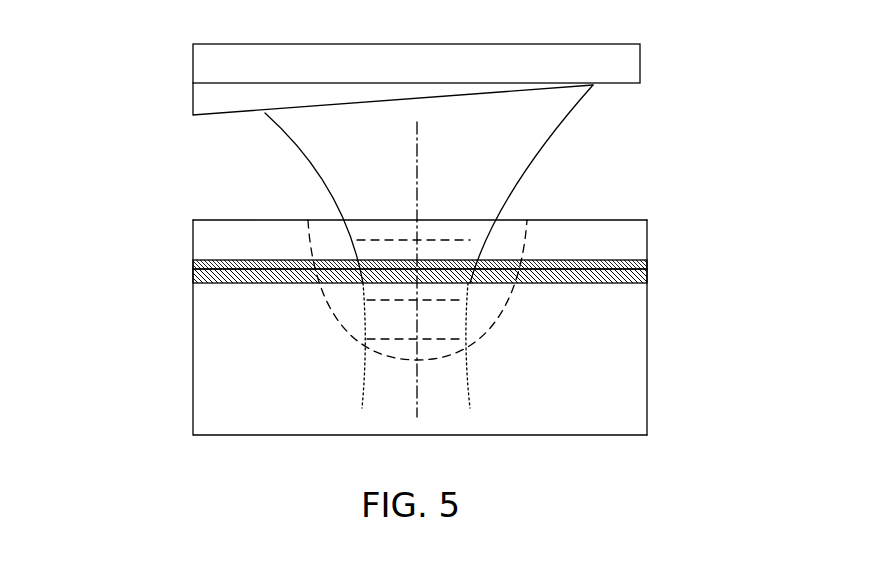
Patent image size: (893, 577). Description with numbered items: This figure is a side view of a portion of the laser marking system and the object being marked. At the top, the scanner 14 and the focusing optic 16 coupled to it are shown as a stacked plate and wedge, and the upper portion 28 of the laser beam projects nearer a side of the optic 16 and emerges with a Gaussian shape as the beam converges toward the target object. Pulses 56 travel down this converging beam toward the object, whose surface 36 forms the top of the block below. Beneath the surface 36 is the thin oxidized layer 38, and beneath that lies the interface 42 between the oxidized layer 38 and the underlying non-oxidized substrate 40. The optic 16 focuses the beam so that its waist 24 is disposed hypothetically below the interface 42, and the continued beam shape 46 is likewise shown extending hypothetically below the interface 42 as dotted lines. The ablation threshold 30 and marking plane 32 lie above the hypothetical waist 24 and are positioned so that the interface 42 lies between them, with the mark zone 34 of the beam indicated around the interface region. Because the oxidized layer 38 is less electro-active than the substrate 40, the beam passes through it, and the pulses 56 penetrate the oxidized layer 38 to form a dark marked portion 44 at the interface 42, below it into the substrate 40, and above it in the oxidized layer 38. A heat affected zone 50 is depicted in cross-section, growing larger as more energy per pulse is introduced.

The scanner 14 is at (203, 62).
The focusing optic 16 is at (203, 97).
The pulses 56 is at (470, 134).
The upper portion of laser beam 28 is at (482, 152).
The heat affected zone 50 is at (326, 243).
The marking plane 32 is at (395, 235).
The interface 42 is at (255, 267).
The mark zone 34 is at (443, 253).
The surface 36 is at (633, 220).
The oxidized layer 38 is at (618, 241).
The ablation threshold 30 is at (393, 300).
The dark marked portion 44 is at (580, 277).
The underlying substrate 40 is at (258, 370).
The waist 24 is at (398, 338).
The continued beam shape 46 is at (465, 368).